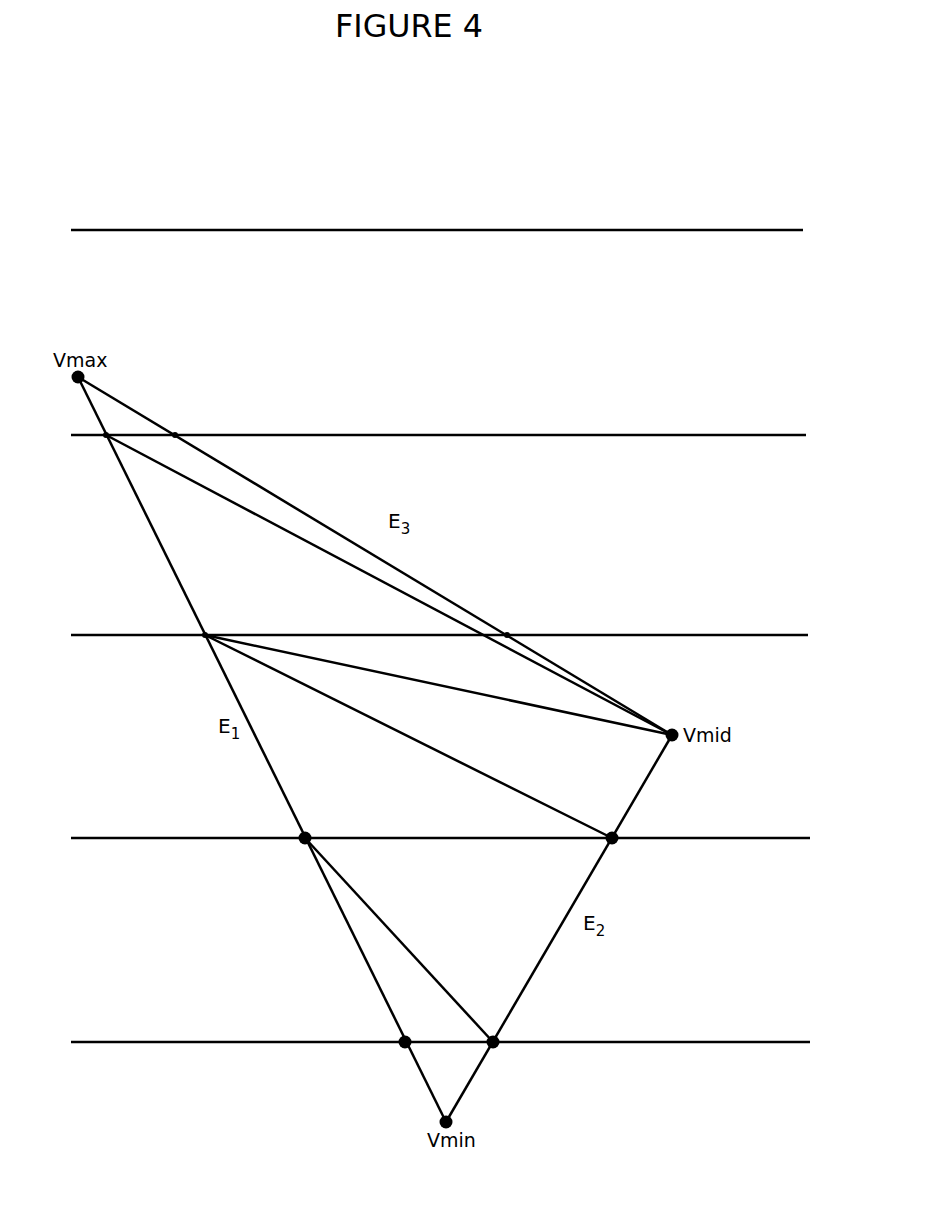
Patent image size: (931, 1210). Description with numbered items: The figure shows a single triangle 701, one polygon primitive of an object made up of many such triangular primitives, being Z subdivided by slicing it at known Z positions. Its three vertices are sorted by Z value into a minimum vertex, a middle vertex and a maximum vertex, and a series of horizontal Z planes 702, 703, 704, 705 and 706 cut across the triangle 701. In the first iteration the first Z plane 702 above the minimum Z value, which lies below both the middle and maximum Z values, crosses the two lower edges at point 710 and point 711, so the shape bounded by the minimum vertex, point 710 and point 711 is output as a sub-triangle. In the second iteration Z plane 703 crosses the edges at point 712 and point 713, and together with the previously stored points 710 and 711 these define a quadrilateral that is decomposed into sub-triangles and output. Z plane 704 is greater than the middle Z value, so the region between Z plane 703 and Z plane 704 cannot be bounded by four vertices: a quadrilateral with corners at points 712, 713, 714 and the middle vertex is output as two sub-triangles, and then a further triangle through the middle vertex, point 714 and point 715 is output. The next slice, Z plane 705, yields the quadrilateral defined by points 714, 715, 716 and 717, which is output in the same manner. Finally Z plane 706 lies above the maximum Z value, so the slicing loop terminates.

The triangle 701 is at (522, 557).
The Z plane 702 is at (790, 1042).
The Z plane 703 is at (790, 838).
The Z plane 704 is at (785, 635).
The Z plane 705 is at (785, 435).
The Z plane 706 is at (780, 230).
The point 710 is at (403, 1047).
The point 711 is at (496, 1047).
The point 712 is at (304, 843).
The point 713 is at (616, 843).
The point 714 is at (204, 640).
The point 715 is at (510, 637).
The point 716 is at (104, 440).
The point 717 is at (181, 437).